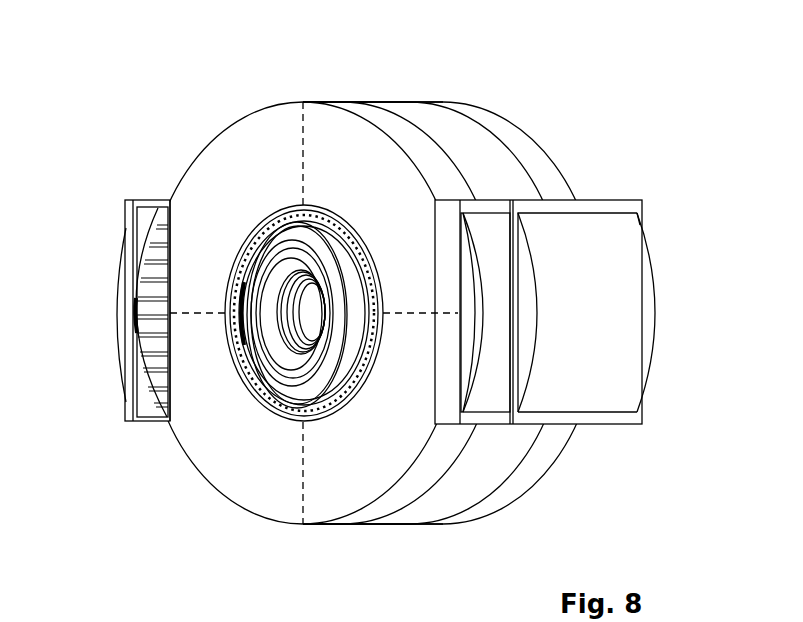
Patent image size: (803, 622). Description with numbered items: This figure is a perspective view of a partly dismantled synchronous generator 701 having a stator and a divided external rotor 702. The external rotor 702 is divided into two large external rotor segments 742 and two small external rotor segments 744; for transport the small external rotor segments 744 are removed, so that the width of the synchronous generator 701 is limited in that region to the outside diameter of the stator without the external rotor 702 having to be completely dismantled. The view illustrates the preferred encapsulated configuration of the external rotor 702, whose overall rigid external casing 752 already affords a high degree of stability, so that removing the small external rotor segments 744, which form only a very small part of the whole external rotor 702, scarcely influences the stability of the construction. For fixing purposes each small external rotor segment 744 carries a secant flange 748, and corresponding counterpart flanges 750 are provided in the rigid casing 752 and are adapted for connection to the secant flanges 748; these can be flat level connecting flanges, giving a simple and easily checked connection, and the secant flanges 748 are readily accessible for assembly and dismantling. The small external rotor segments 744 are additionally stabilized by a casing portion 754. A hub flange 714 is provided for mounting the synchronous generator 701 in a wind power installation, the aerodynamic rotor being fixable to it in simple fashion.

The synchronous generator 701 is at (597, 62).
The external rotor 702 is at (433, 113).
The hub flange 714 is at (327, 407).
The large external rotor segment 742 is at (478, 157).
The small external rotor segment 744 is at (128, 310).
The secant flange 748 is at (143, 205).
The counterpart flange 750 is at (192, 405).
The rigid external casing 752 is at (365, 181).
The casing portion 754 is at (636, 262).